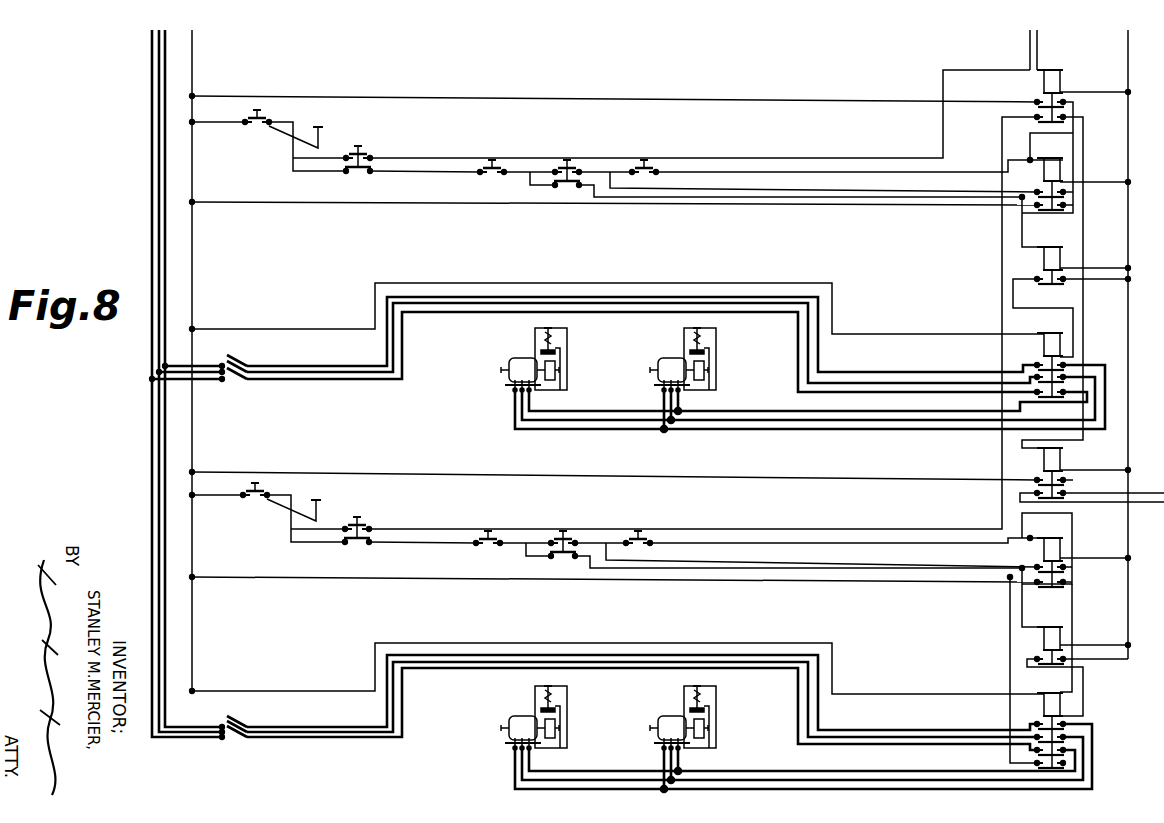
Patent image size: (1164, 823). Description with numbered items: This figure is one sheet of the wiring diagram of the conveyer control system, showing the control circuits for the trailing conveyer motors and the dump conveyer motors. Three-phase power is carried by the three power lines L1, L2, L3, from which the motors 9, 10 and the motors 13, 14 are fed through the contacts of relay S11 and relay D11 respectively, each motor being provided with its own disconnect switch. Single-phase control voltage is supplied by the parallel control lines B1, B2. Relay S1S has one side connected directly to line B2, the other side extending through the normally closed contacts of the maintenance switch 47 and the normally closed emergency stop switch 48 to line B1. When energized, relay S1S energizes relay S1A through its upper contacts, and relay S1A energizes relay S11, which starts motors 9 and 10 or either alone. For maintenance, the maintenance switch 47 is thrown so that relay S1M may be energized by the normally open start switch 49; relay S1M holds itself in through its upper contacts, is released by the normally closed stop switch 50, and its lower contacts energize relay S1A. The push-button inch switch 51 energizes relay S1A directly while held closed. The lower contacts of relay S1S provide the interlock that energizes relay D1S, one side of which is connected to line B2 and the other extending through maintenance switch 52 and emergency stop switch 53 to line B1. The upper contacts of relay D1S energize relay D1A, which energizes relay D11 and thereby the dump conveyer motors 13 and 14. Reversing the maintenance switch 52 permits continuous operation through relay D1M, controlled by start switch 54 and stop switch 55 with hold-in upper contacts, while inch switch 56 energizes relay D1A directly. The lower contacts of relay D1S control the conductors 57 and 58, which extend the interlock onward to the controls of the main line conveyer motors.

The motor 9 is at (522, 368).
The motor 10 is at (670, 368).
The motor 13 is at (522, 726).
The motor 14 is at (678, 726).
The maintenance switch 47 is at (365, 153).
The emergency stop switch 48 is at (263, 121).
The start switch 49 is at (651, 165).
The stop switch 50 is at (500, 168).
The inch switch 51 is at (574, 168).
The maintenance switch 52 is at (364, 524).
The emergency stop switch 53 is at (261, 494).
The start switch 54 is at (644, 536).
The stop switch 55 is at (496, 539).
The inch switch 56 is at (571, 539).
The conductor 57 is at (1149, 491).
The conductor 58 is at (1154, 505).
The control line B1 is at (193, 68).
The control line B2 is at (1127, 58).
The power line L1 is at (326, 380).
The power line L2 is at (368, 373).
The power line L3 is at (382, 368).
The relay S1S is at (1050, 87).
The relay S1M is at (1050, 175).
The relay S1A is at (1050, 256).
The relay S11 is at (1050, 356).
The relay D1S is at (1050, 464).
The relay D1M is at (1050, 553).
The relay D1A is at (1050, 636).
The relay D11 is at (1050, 722).